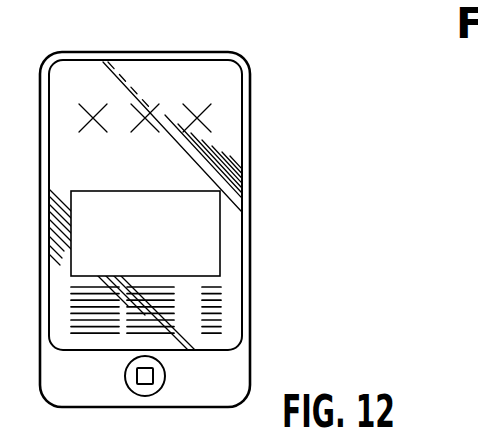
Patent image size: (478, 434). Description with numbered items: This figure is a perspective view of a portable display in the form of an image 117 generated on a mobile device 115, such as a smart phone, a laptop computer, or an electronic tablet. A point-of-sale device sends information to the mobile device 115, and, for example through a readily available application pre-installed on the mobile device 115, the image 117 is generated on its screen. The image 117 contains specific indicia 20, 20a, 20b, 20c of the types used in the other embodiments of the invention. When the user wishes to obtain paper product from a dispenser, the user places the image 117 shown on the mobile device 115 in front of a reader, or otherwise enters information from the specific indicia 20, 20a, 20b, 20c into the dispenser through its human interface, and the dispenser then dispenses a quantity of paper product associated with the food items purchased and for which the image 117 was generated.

The mobile device 115 is at (240, 51).
The image 117 is at (77, 78).
The specific indicia 20 is at (259, 233).
The specific indicia 20a is at (145, 233).
The specific indicia 20b is at (145, 233).
The specific indicia 20c is at (220, 243).